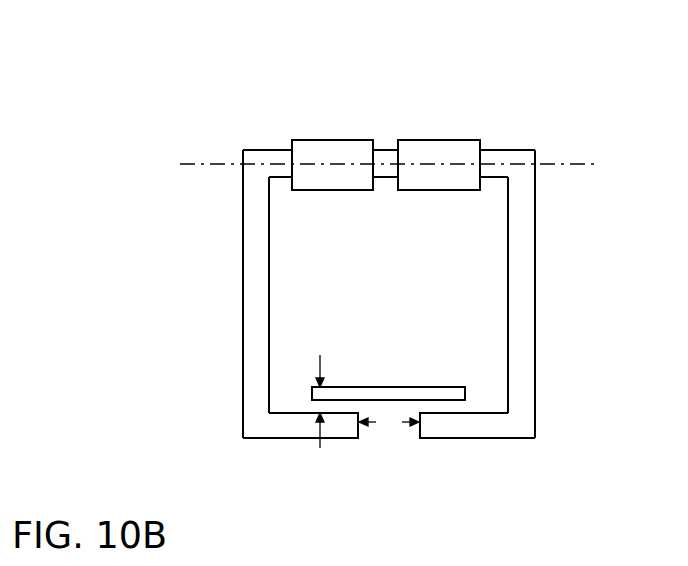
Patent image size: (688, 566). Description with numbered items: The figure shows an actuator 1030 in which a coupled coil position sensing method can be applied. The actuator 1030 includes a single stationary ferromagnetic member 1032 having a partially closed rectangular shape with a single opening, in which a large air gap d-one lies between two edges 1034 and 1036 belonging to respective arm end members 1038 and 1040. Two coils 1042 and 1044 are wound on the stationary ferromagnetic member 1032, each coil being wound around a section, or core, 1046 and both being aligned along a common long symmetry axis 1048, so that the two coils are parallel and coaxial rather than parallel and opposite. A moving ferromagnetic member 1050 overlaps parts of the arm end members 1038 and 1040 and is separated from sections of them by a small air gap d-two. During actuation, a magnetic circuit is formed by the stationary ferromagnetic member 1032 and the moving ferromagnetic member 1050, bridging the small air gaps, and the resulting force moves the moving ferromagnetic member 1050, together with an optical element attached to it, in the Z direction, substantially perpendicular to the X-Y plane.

The actuator 1030 is at (226, 32).
The stationary ferromagnetic member 1032 is at (520, 150).
The edge 1034 is at (353, 440).
The edge 1036 is at (422, 440).
The arm end member 1038 is at (253, 440).
The arm end member 1040 is at (525, 440).
The coil 1042 is at (326, 140).
The coil 1044 is at (447, 140).
The section (core) 1046 is at (187, 163).
The common long symmetry axis 1048 is at (602, 170).
The moving ferromagnetic member 1050 is at (432, 387).